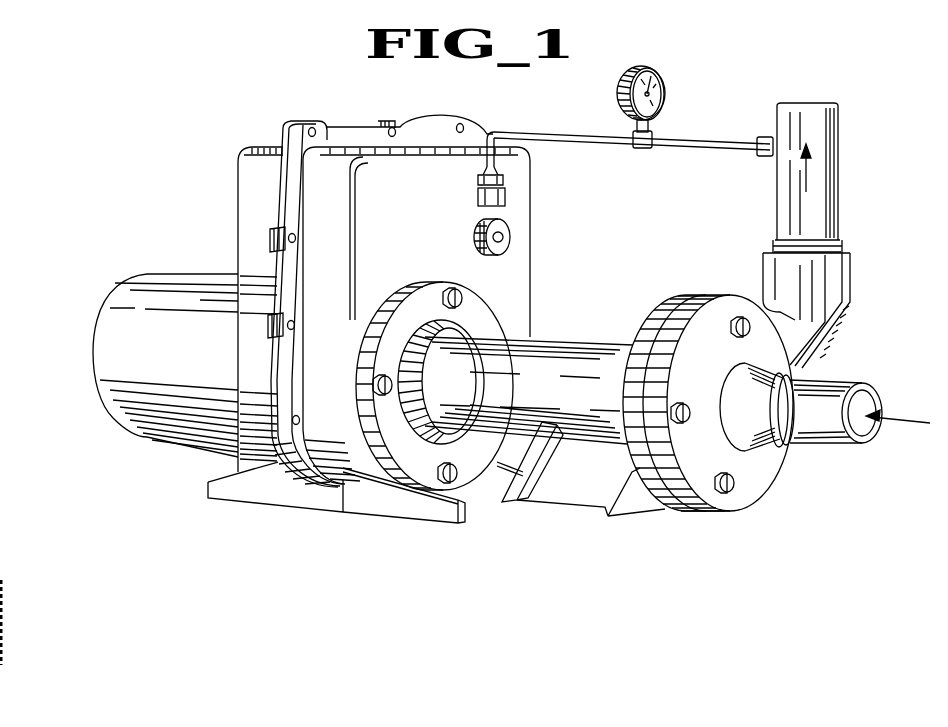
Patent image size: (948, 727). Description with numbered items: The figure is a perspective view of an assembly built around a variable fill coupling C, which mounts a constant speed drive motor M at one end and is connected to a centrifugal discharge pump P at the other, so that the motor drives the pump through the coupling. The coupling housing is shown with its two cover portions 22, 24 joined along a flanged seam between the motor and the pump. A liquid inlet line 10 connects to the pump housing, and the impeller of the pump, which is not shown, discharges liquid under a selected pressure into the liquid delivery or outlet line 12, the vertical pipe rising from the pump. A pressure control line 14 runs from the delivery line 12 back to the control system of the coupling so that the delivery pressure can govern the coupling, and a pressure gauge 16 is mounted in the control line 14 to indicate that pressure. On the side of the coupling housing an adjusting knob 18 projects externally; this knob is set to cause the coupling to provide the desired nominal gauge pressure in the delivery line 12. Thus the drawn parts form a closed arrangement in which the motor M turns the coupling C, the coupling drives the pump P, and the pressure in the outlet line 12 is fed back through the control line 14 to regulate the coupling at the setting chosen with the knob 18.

The liquid inlet line 10 is at (830, 433).
The liquid delivery or outlet line 12 is at (830, 213).
The pressure control line 14 is at (508, 130).
The pressure gauge 16 is at (667, 87).
The adjusting knob 18 is at (510, 237).
The coupling cover half 22 is at (245, 188).
The coupling cover half 24 is at (353, 148).
The variable fill coupling C is at (266, 139).
The constant speed drive motor M is at (152, 299).
The centrifugal discharge pump P is at (776, 381).